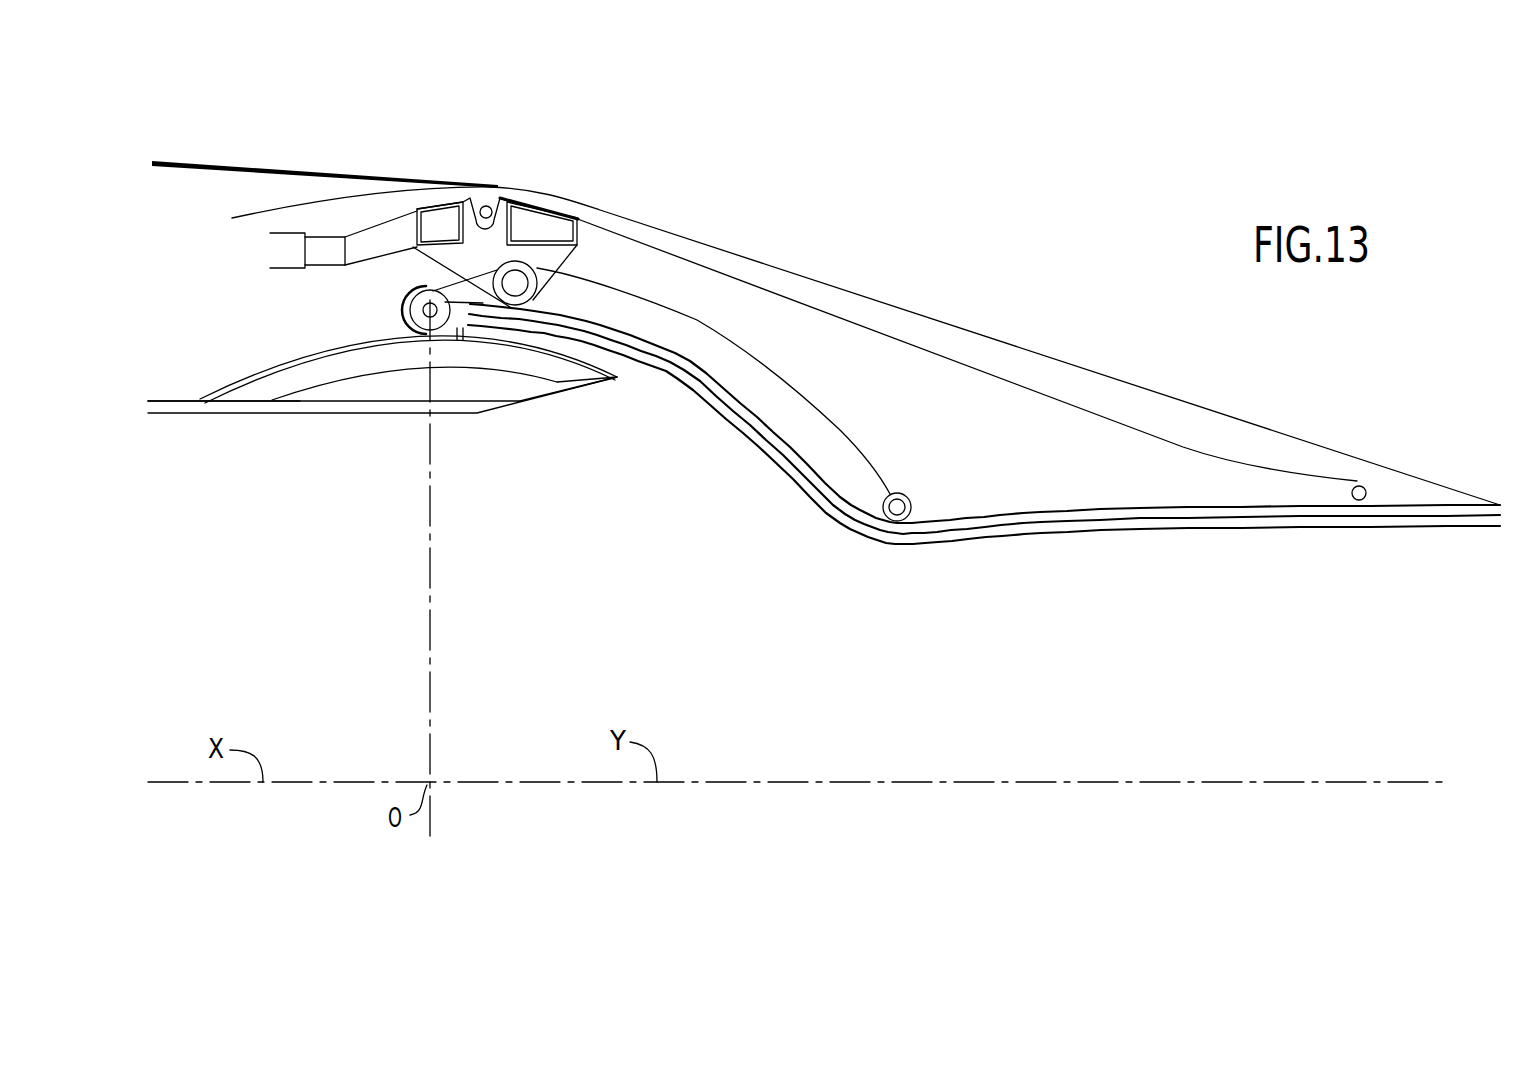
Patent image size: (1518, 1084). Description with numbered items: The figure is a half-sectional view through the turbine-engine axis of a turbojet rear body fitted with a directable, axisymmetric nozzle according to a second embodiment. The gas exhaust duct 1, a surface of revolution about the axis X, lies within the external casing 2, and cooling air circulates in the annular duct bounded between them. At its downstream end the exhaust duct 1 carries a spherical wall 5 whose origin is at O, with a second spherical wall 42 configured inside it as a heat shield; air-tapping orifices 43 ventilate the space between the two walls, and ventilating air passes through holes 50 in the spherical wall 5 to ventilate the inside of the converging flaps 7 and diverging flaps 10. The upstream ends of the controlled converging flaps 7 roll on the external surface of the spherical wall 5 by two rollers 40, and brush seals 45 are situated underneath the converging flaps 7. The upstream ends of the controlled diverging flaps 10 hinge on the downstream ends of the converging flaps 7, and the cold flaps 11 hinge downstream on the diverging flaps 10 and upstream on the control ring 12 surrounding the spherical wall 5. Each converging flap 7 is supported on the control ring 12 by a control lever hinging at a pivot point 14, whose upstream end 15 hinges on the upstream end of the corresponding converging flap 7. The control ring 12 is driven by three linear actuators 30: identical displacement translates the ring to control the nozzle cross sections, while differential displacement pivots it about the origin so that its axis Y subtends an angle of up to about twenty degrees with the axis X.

The gas exhaust duct 1 is at (170, 413).
The external casing 2 is at (190, 161).
The spherical wall 5 is at (268, 367).
The controlled converging flap 7 is at (755, 425).
The controlled diverging flap 10 is at (1193, 520).
The cold flap 11 is at (967, 343).
The control ring 12 is at (524, 220).
The pivot point 14 is at (517, 277).
The upstream end of control lever 15 is at (423, 340).
The linear actuator 30 is at (286, 263).
The roller 40 is at (423, 306).
The second spherical wall 42 is at (321, 390).
The air-tapping orifice 43 is at (256, 390).
The brush seal 45 is at (460, 340).
The hole 50 is at (577, 363).